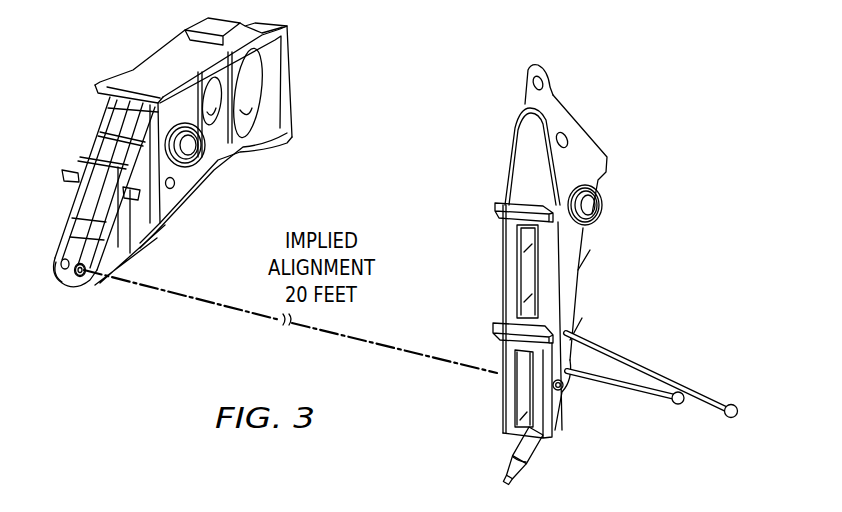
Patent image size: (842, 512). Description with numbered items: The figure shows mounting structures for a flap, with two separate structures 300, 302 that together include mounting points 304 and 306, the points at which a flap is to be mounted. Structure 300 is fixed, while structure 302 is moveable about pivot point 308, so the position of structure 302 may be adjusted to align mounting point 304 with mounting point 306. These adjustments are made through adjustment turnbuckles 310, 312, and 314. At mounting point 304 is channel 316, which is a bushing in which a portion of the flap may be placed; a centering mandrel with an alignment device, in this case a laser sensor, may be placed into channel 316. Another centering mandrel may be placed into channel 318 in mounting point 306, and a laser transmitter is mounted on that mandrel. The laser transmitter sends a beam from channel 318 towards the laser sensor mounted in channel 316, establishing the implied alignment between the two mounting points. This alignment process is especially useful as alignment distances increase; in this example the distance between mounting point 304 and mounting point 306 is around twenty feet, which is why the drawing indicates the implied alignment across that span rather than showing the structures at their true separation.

The structure 300 is at (141, 66).
The structure 302 is at (604, 158).
The mounting point 304 is at (70, 283).
The mounting point 306 is at (565, 386).
The pivot point 308 is at (549, 78).
The adjustment turnbuckle 310 is at (601, 374).
The adjustment turnbuckle 312 is at (654, 368).
The adjustment turnbuckle 314 is at (503, 466).
The channel 316 is at (88, 278).
The channel 318 is at (559, 393).